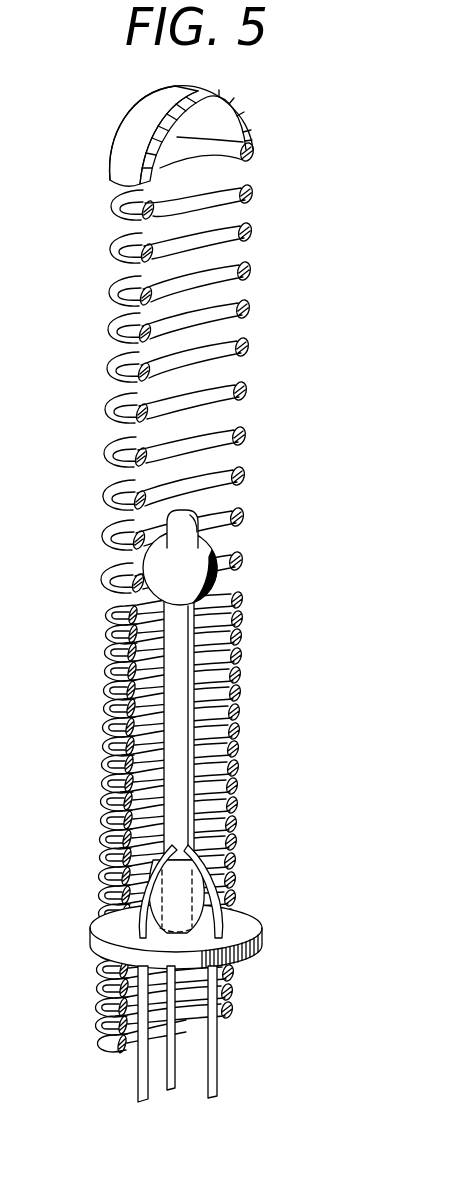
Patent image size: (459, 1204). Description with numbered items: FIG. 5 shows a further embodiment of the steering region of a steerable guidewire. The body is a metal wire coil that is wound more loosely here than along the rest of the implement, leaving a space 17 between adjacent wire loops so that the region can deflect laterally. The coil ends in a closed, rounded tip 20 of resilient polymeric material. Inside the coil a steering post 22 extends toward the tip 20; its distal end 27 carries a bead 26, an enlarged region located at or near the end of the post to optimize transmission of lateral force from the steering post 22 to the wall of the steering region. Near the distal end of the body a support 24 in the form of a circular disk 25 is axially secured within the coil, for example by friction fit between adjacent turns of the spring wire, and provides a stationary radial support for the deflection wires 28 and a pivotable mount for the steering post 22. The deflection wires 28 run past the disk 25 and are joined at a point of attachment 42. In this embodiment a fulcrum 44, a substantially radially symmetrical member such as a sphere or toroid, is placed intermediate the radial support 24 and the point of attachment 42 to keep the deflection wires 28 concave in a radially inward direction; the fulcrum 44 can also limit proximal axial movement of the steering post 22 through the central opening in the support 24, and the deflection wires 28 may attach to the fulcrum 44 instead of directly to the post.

The space between adjacent wire loops 17 is at (112, 365).
The tip 20 is at (153, 108).
The steering post 22 is at (188, 682).
The support 24 is at (265, 948).
The circular disk 25 is at (256, 920).
The bead 26 is at (218, 548).
The distal end of steering post 27 is at (196, 507).
The deflection wire 28 is at (138, 1099).
The point of attachment 42 is at (192, 836).
The fulcrum 44 is at (172, 886).